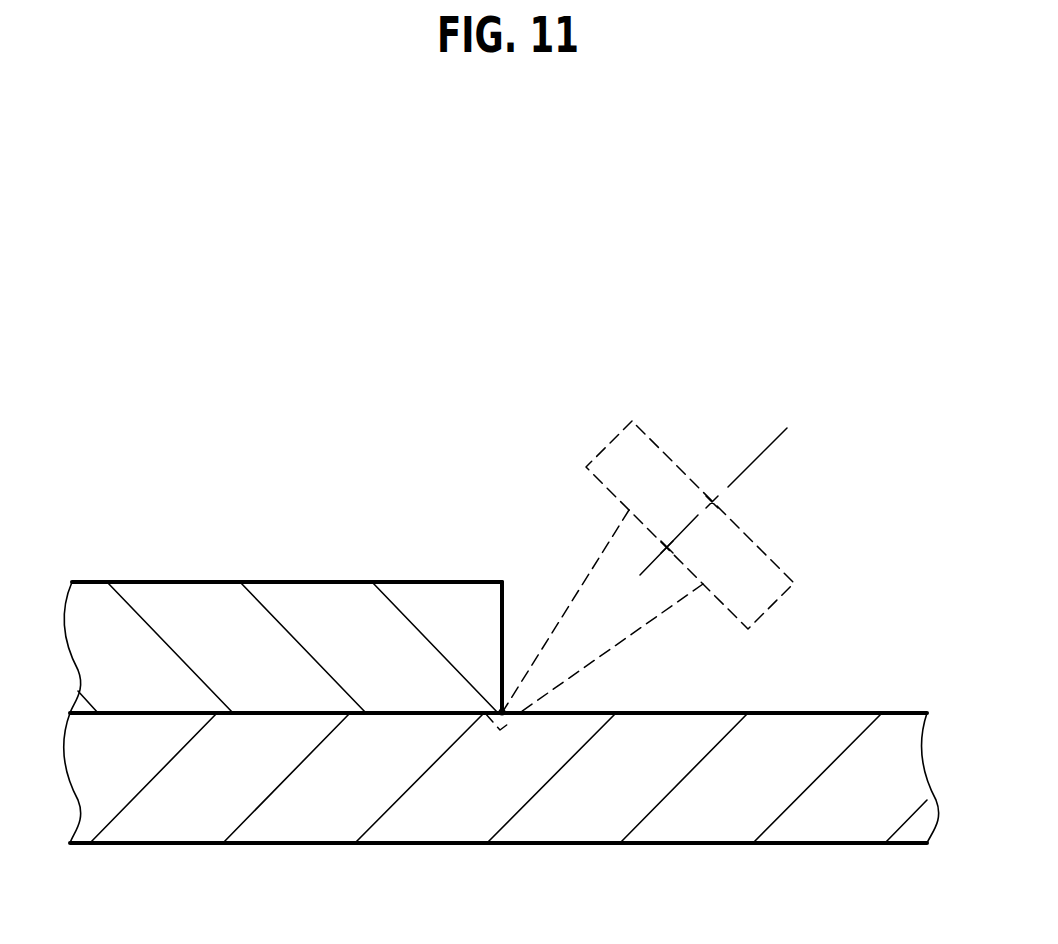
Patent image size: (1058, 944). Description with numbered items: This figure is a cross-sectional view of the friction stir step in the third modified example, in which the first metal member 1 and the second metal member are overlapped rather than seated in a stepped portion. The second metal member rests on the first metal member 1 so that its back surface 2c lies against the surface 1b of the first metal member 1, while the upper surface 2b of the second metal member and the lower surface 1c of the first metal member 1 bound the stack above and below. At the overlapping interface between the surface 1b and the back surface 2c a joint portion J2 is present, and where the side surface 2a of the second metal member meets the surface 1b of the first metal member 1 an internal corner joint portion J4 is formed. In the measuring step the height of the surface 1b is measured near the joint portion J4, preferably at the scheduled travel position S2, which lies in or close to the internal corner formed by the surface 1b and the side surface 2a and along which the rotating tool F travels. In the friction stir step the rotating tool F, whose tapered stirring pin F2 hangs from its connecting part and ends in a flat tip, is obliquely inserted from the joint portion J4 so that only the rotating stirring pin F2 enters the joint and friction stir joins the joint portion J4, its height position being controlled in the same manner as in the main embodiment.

The first metal member 1 is at (501, 751).
The surface of the first metal member 1b is at (793, 713).
The lower surface of first plate 1c is at (715, 843).
The side surface of the second metal member 2a is at (504, 598).
The upper surface of second plate 2b is at (410, 582).
The back surface of the second metal member 2c is at (168, 715).
The rotating tool F is at (790, 540).
The stirring pin F2 is at (587, 563).
The joint portion J2 is at (393, 713).
The scheduled travel position S2 is at (492, 718).
The joint portion (internal corner portion) J4 is at (523, 696).